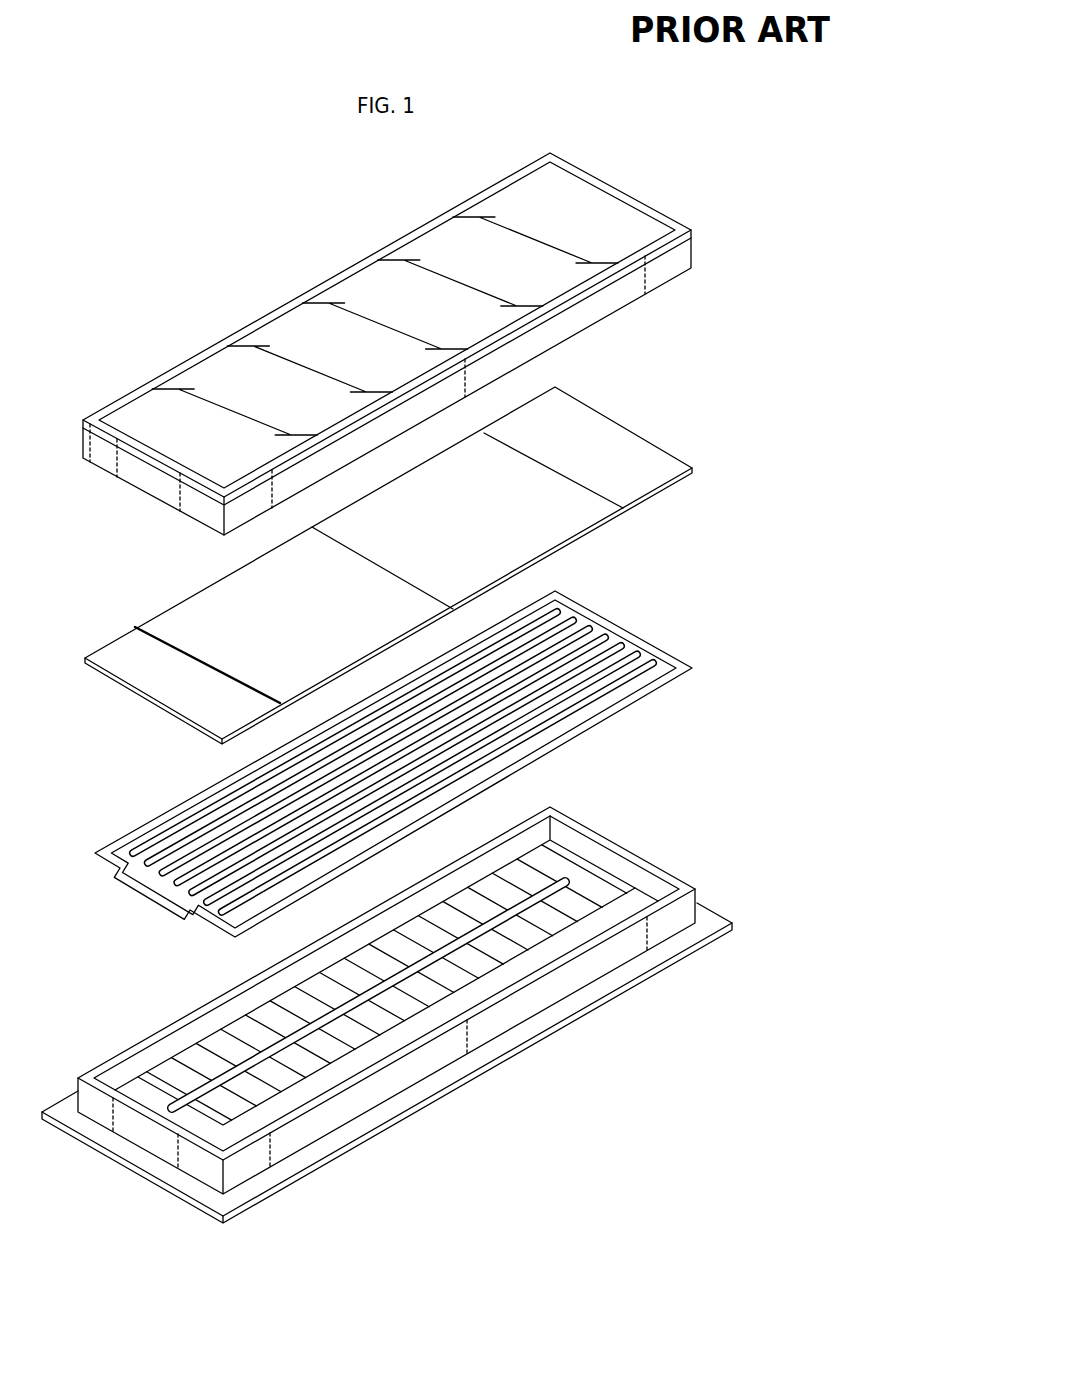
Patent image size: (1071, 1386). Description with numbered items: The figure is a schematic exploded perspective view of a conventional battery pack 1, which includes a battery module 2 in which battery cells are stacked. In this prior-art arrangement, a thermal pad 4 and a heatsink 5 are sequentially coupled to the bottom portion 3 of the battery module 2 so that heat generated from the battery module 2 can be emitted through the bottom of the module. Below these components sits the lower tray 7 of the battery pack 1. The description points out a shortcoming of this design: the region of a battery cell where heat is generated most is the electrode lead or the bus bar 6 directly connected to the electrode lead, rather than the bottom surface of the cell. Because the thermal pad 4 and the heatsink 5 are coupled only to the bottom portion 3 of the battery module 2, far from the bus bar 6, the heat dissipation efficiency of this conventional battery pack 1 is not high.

The battery pack 1 is at (198, 268).
The battery module 2 is at (612, 212).
The bottom portion 3 is at (653, 292).
The thermal pad 4 is at (619, 444).
The heatsink 5 is at (668, 662).
The bus bar 6 is at (547, 332).
The lower tray 7 is at (548, 1018).